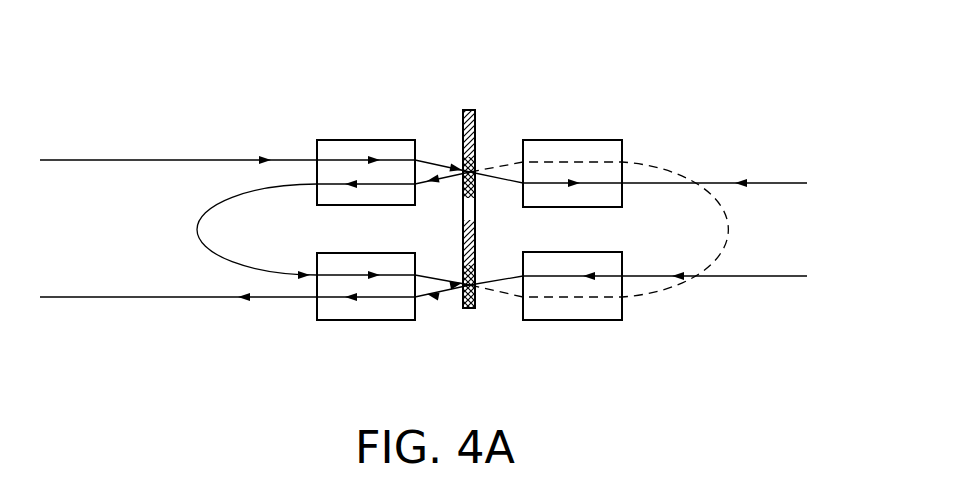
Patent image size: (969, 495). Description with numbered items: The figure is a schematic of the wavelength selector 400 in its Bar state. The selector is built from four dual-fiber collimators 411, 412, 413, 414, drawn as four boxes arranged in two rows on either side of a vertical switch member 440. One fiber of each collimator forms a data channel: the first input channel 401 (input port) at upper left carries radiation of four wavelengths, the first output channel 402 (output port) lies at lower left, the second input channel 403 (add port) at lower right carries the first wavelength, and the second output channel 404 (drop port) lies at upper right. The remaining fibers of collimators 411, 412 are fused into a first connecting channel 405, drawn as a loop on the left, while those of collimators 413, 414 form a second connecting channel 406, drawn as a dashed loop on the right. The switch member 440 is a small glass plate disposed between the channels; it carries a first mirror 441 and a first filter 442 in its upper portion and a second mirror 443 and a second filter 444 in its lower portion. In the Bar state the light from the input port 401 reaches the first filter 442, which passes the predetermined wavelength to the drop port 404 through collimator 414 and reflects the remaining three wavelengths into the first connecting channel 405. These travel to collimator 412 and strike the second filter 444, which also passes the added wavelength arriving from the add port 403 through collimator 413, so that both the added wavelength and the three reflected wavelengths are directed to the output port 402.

The wavelength selector 400 is at (96, 40).
The first input channel 401 is at (112, 162).
The first output channel 402 is at (110, 296).
The second input channel 403 is at (783, 277).
The second output channel 404 is at (783, 183).
The first connecting channel 405 is at (197, 233).
The second connecting channel 406 is at (745, 230).
The dual-fiber collimator 411 is at (366, 140).
The dual-fiber collimator 412 is at (366, 320).
The dual-fiber collimator 413 is at (573, 320).
The dual-fiber collimator 414 is at (573, 140).
The switch member 440 is at (476, 201).
The first mirror 441 is at (476, 130).
The first filter 442 is at (463, 155).
The second mirror 443 is at (477, 235).
The second filter 444 is at (467, 310).